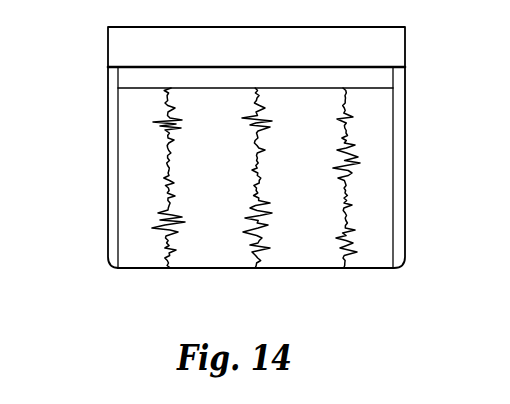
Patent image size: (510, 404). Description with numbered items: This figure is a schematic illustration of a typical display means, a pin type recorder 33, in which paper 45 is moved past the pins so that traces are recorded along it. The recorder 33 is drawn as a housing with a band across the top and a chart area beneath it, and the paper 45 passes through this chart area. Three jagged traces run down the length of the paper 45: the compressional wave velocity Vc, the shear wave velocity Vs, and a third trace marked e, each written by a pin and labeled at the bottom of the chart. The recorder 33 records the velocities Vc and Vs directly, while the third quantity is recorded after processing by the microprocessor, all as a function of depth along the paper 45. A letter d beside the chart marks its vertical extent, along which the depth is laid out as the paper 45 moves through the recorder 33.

The recorder 33 is at (112, 59).
The paper 45 is at (266, 181).
The chart recording height d is at (97, 167).
The compressional wave velocity Vc is at (168, 183).
The shear wave velocity Vs is at (257, 183).
The error trace e is at (346, 182).